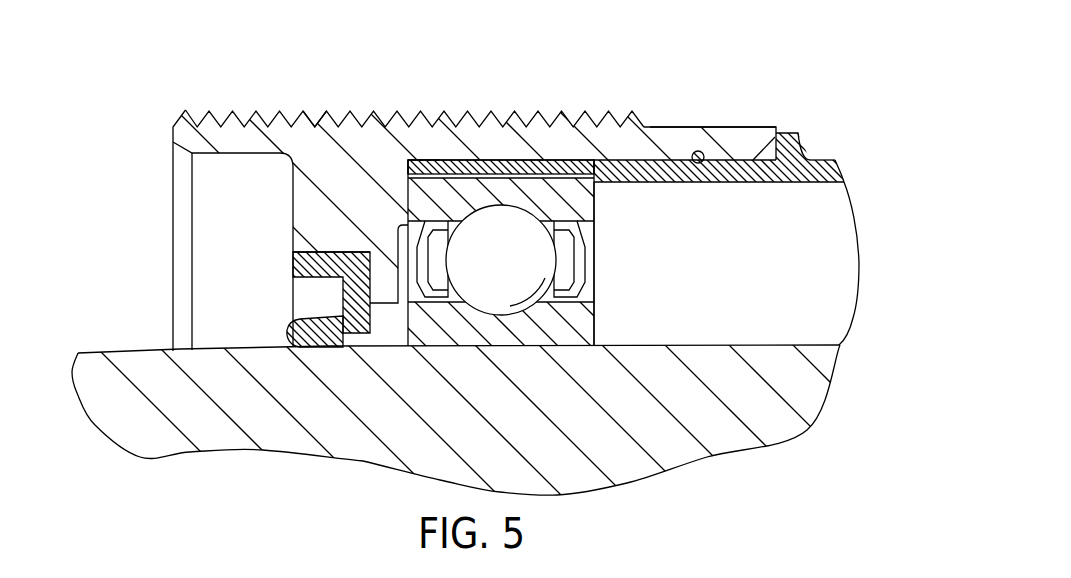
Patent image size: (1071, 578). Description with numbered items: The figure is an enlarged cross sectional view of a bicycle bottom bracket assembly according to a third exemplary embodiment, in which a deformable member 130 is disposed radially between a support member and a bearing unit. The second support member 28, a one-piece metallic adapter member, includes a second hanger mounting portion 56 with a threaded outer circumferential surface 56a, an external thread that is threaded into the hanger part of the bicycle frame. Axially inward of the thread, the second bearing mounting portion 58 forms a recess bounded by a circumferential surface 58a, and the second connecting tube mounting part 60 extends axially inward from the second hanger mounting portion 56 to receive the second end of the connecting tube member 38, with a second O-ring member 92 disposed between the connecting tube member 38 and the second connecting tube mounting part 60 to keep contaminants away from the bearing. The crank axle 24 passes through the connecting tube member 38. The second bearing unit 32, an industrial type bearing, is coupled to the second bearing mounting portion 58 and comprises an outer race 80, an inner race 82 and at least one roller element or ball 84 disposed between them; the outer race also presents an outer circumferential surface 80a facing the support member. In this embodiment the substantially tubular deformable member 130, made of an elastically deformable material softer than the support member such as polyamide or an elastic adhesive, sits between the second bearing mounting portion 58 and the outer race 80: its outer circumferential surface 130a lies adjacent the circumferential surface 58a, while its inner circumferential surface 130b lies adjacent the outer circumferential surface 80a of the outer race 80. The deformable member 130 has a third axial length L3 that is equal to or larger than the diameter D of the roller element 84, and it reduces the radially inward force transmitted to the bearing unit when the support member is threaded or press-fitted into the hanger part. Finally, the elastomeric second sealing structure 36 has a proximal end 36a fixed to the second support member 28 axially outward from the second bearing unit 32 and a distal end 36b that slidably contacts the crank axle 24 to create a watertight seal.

The crank axle 24 is at (70, 363).
The second support member 28 is at (168, 173).
The second hanger mounting portion 56 is at (272, 108).
The threaded outer circumferential surface 56a is at (306, 113).
The second bearing mounting portion 58 is at (586, 154).
The circumferential surface 58a is at (497, 162).
The second connecting tube mounting part 60 is at (749, 122).
The second O-ring member 92 is at (699, 151).
The connecting tube member 38 is at (822, 156).
The deformable member 130 is at (543, 158).
The outer circumferential surface 130a is at (423, 159).
The inner circumferential surface 130b is at (586, 198).
The outer race 80 is at (596, 210).
The bearing housing top edge 80a is at (407, 158).
The inner race 82 is at (527, 328).
The roller element or ball 84 is at (493, 290).
The second bearing unit 32 is at (602, 314).
The second sealing structure 36 is at (342, 295).
The proximal end 36a is at (332, 250).
The distal end 36b is at (290, 326).
The diameter D is at (551, 247).
The third axial length L3 is at (409, 104).